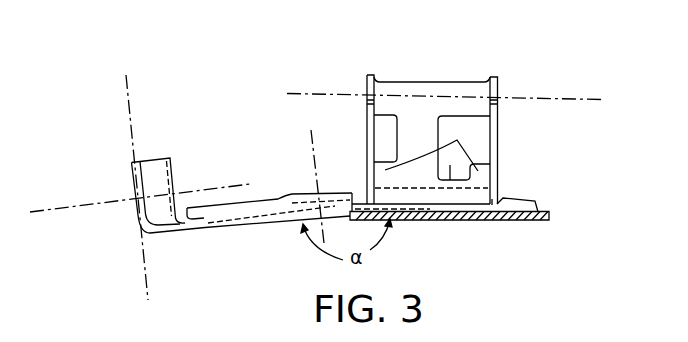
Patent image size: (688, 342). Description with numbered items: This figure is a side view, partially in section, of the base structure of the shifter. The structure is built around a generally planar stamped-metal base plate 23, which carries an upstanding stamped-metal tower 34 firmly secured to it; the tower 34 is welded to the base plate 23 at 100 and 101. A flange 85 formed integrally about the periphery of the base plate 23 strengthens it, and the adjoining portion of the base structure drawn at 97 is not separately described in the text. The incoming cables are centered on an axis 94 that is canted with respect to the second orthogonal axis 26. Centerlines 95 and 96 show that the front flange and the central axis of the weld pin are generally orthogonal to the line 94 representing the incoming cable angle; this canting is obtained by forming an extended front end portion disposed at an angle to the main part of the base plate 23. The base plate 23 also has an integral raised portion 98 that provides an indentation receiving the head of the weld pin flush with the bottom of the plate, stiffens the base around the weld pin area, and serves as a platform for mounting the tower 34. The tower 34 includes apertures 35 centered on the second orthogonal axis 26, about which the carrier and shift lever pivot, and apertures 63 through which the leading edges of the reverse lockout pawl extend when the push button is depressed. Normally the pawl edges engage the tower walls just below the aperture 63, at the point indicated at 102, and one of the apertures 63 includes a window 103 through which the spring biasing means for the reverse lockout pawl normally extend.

The base plate 23 is at (527, 215).
The second orthogonal axis 26 is at (568, 100).
The tower 34 is at (437, 106).
The apertures 35 is at (367, 75).
The apertures 63 is at (380, 115).
The flange 85 is at (231, 214).
The axis 94 is at (87, 203).
The centerline 95 is at (128, 93).
The centerline 96 is at (312, 143).
The plate 97 is at (267, 227).
The raised portion 98 is at (492, 205).
The weld location 100 is at (363, 203).
The weld location 101 is at (497, 199).
The pawl engagement point 102 is at (457, 138).
The window 103 is at (450, 180).